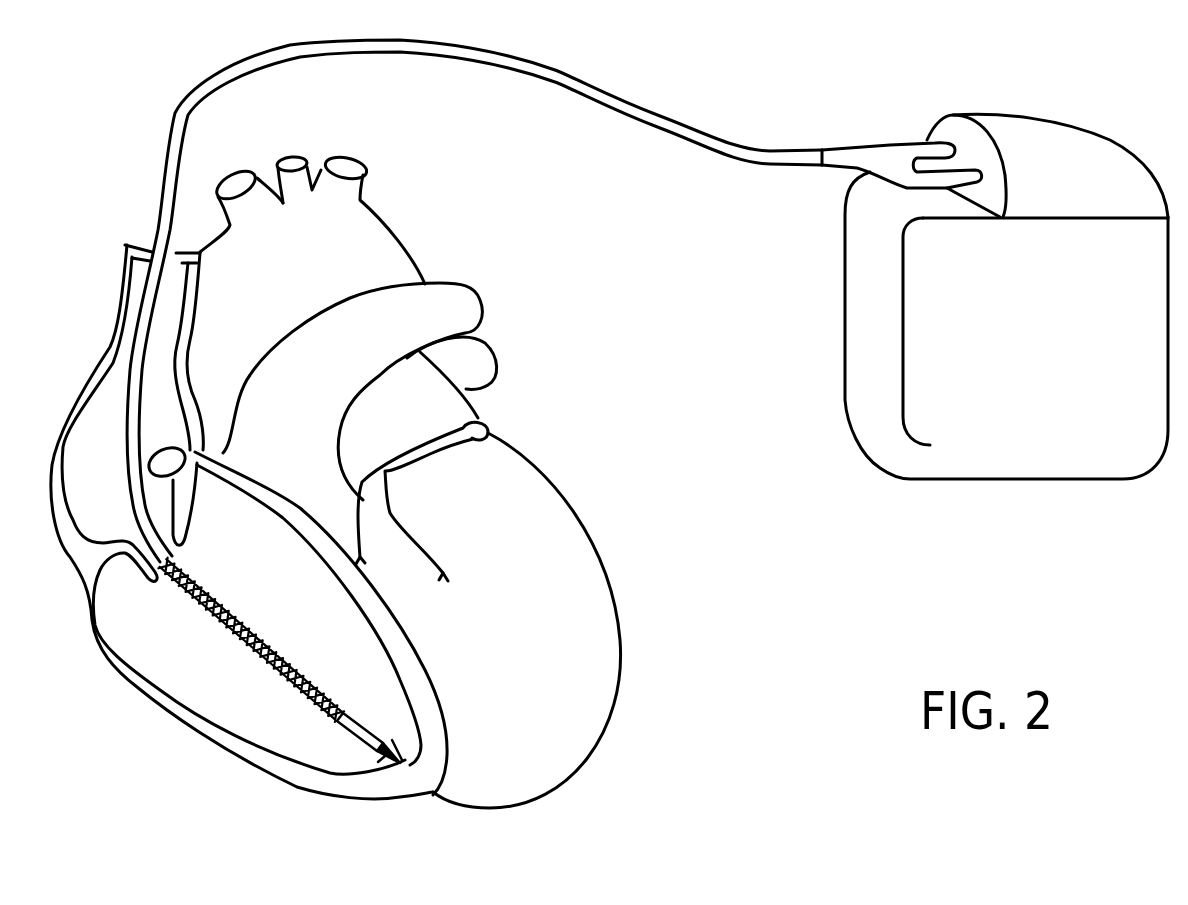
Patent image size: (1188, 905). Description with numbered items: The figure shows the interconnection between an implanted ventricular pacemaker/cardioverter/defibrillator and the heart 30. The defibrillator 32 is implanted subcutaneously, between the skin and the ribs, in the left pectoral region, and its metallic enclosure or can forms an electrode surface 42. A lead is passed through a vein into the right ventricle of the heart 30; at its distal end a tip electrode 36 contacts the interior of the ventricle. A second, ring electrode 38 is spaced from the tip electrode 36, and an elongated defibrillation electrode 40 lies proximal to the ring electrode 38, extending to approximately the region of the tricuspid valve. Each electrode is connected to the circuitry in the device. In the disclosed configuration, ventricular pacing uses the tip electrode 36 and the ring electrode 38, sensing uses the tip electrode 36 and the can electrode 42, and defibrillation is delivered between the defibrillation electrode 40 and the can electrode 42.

The heart 30 is at (520, 465).
The defibrillator 32 is at (537, 82).
The tip electrode 36 is at (405, 768).
The ring electrode 38 is at (348, 716).
The defibrillation electrode 40 is at (247, 633).
The electrode surface 42 is at (1083, 440).